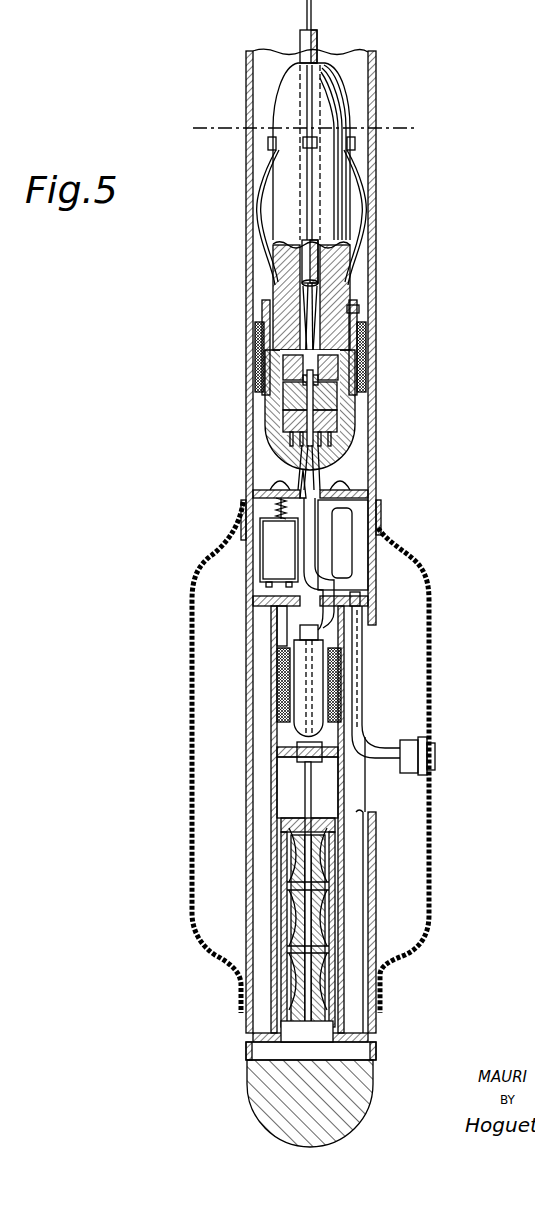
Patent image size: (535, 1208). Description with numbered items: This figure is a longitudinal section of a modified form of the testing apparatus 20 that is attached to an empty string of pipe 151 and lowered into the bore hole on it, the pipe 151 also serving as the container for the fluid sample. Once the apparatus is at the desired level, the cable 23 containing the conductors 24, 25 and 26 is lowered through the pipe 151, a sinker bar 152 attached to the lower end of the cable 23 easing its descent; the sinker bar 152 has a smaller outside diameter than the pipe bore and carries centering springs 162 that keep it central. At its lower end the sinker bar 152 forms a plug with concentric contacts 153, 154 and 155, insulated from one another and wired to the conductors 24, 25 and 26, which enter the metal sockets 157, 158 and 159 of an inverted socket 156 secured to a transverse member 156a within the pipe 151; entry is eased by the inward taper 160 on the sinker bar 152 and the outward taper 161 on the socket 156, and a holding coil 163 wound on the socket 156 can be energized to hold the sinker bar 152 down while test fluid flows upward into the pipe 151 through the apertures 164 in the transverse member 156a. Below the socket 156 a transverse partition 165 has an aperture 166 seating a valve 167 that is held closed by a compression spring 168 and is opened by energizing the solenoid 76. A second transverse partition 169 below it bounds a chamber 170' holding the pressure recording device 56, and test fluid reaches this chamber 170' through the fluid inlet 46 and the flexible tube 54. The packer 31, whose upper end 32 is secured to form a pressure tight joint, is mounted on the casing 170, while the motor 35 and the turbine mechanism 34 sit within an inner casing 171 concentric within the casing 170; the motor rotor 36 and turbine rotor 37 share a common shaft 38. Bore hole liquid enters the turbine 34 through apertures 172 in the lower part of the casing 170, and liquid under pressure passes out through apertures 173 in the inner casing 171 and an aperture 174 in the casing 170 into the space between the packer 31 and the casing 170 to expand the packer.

The testing apparatus 20 is at (188, 517).
The cable 23 is at (320, 40).
The conductor 24 is at (304, 26).
The conductor 25 is at (303, 8).
The conductor 26 is at (318, 10).
The packer 31 is at (430, 665).
The upper end of packer 32 is at (381, 504).
The turbine mechanism 34 is at (300, 902).
The electric motor 35 is at (300, 631).
The rotor of the motor 36 is at (294, 669).
The rotor of the turbine mechanism 37 is at (313, 917).
The common shaft 38 is at (305, 799).
The fluid inlet 46 is at (408, 739).
The flexible tube 54 is at (362, 696).
The pressure recording device 56 is at (340, 524).
The solenoid 76 is at (268, 559).
The string of pipe 151 is at (377, 79).
The sinker bar 152 is at (350, 110).
The concentric contact 153 is at (285, 394).
The concentric contact 154 is at (290, 379).
The concentric contact 155 is at (280, 364).
The inverted socket 156 is at (357, 409).
The transverse member 156a is at (364, 313).
The metal socket 157 is at (282, 419).
The metal socket 158 is at (285, 436).
The metal socket 159 is at (270, 451).
The inward taper of sinker bar 160 is at (351, 389).
The outward taper of socket 161 is at (265, 291).
The centering springs 162 is at (258, 174).
The holding coil 163 is at (357, 367).
The apertures 164 is at (256, 316).
The transverse partition 165 is at (360, 482).
The aperture 166 is at (270, 479).
The valve 167 is at (275, 499).
The compression spring 168 is at (273, 511).
The second transverse partition 169 is at (268, 594).
The casing 170 is at (201, 757).
The chamber 170' is at (403, 586).
The inner casing 171 is at (350, 881).
The apertures 172 is at (246, 1050).
The apertures 173 is at (345, 784).
The aperture 174 is at (345, 797).